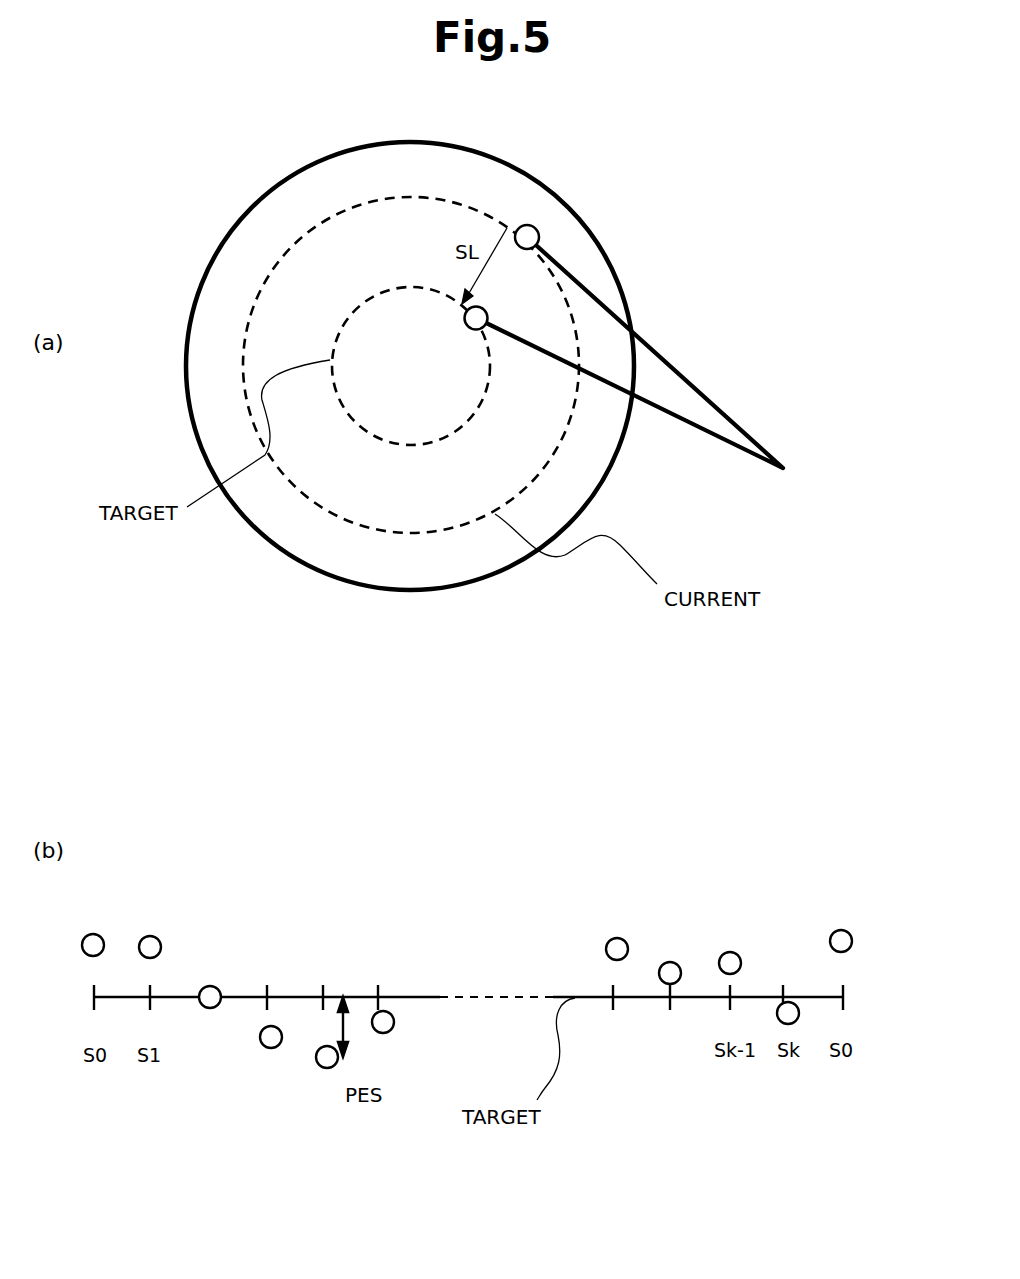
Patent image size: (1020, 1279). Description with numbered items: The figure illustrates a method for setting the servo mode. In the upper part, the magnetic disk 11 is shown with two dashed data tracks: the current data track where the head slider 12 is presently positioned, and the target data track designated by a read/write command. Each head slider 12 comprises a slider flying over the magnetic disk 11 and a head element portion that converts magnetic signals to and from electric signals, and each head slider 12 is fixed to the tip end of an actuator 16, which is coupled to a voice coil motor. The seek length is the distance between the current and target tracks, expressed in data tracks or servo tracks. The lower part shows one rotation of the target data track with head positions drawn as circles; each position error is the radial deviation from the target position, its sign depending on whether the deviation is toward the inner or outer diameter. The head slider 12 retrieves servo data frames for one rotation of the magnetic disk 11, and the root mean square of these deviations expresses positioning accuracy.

The magnetic disk 11 is at (300, 565).
The head slider 12 is at (527, 225).
The actuator 16 is at (670, 363).